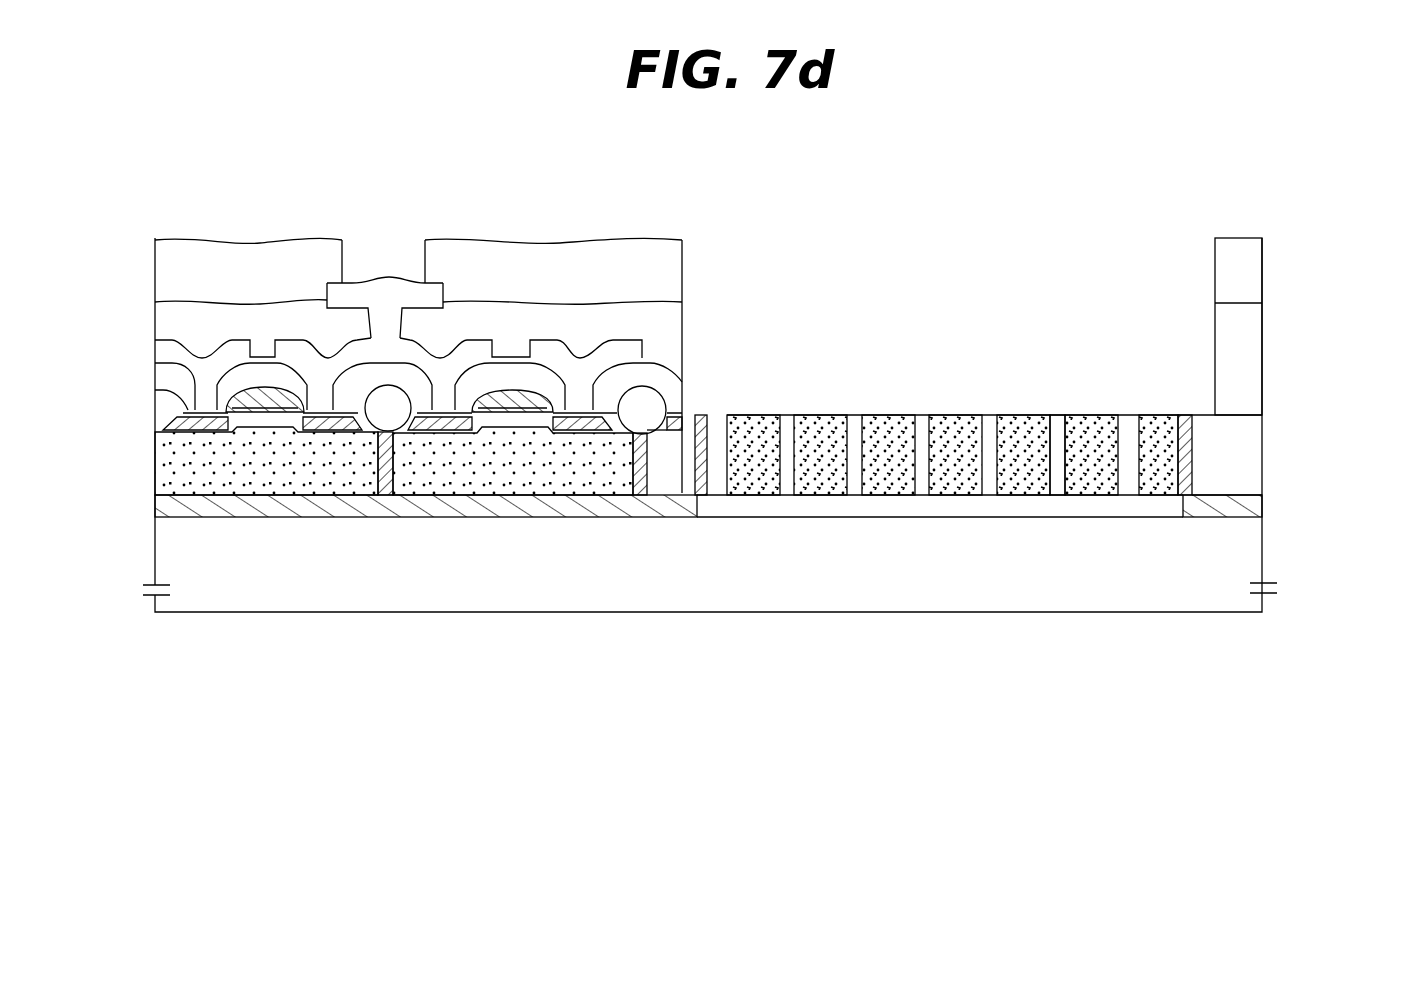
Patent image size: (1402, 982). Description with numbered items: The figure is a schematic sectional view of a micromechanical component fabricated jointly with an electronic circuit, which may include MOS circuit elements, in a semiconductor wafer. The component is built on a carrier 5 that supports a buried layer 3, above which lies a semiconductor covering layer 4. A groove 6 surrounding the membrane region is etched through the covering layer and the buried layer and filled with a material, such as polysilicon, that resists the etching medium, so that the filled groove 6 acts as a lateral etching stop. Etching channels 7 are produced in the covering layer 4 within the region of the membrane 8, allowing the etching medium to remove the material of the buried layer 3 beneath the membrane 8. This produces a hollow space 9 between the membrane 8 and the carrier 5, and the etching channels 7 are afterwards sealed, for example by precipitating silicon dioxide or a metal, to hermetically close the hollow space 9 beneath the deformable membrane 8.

The buried layer 3 is at (1262, 502).
The covering layer 4 is at (1252, 450).
The carrier 5 is at (1252, 555).
The groove 6 is at (702, 497).
The etching channels 7 is at (1058, 413).
The membrane 8 is at (1097, 413).
The hollow space 9 is at (955, 505).